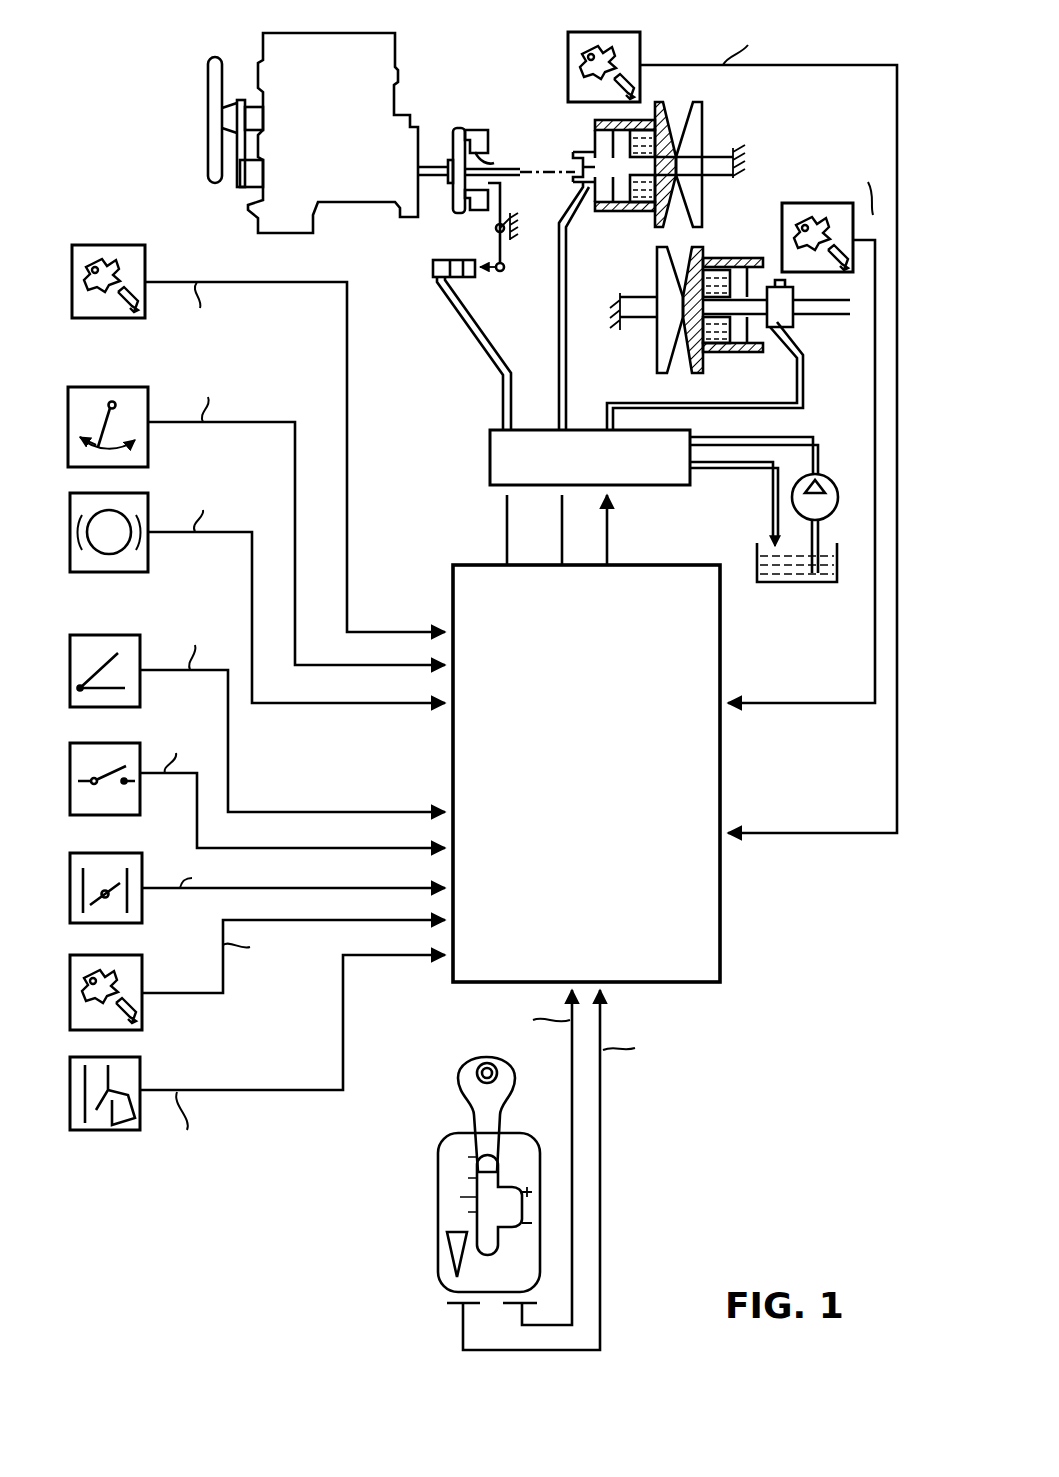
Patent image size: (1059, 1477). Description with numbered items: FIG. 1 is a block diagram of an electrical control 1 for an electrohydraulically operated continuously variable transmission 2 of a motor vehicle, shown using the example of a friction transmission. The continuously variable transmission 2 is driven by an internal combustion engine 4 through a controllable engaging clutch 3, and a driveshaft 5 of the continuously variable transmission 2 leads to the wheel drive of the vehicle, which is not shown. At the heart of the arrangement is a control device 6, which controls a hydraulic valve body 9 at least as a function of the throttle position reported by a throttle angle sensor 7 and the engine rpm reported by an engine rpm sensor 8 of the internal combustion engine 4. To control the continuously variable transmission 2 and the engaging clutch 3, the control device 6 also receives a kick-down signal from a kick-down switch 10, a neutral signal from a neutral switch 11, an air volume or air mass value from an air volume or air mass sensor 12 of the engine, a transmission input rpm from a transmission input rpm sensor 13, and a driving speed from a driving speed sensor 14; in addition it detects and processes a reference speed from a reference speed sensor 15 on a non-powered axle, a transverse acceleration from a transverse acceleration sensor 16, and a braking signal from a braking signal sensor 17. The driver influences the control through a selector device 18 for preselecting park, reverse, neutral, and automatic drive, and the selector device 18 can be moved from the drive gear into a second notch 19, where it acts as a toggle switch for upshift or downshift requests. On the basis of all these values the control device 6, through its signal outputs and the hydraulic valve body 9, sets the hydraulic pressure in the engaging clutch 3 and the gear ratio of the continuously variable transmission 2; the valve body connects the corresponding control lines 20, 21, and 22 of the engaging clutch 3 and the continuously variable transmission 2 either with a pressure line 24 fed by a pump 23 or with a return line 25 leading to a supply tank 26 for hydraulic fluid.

The control 1 is at (765, 893).
The continuously variable transmission 2 is at (784, 132).
The engaging clutch 3 is at (490, 118).
The internal combustion engine 4 is at (397, 92).
The driveshaft 5 is at (818, 313).
The control device 6 is at (720, 625).
The throttle angle sensor 7 is at (142, 912).
The engine rpm sensor 8 is at (142, 1007).
The hydraulic valve body 9 is at (490, 452).
The kick-down switch 10 is at (123, 633).
The neutral switch 11 is at (140, 790).
The air volume or air mass sensor 12 is at (117, 1130).
The transmission input rpm sensor 13 is at (640, 45).
The driving speed sensor 14 is at (813, 202).
The reference speed sensor 15 is at (80, 318).
The transverse acceleration sensor 16 is at (148, 440).
The braking signal sensor 17 is at (148, 552).
The selector device 18 is at (442, 1190).
The second notch 19 is at (510, 1233).
The control line 20 is at (485, 340).
The control line 21 is at (567, 264).
The control line 22 is at (611, 398).
The pump 23 is at (850, 466).
The pressure line 24 is at (810, 430).
The return line 25 is at (768, 492).
The supply tank 26 is at (803, 583).